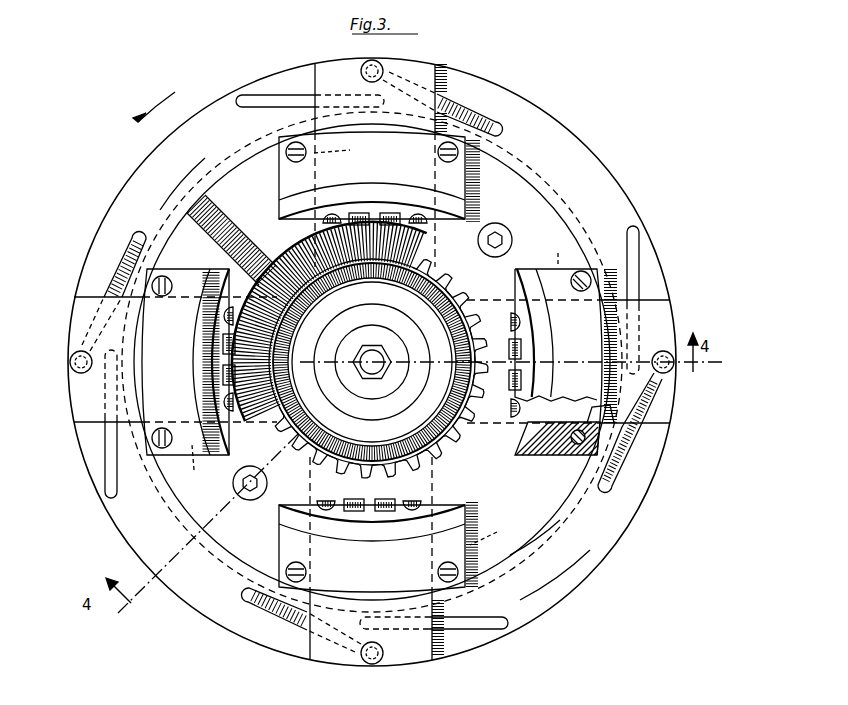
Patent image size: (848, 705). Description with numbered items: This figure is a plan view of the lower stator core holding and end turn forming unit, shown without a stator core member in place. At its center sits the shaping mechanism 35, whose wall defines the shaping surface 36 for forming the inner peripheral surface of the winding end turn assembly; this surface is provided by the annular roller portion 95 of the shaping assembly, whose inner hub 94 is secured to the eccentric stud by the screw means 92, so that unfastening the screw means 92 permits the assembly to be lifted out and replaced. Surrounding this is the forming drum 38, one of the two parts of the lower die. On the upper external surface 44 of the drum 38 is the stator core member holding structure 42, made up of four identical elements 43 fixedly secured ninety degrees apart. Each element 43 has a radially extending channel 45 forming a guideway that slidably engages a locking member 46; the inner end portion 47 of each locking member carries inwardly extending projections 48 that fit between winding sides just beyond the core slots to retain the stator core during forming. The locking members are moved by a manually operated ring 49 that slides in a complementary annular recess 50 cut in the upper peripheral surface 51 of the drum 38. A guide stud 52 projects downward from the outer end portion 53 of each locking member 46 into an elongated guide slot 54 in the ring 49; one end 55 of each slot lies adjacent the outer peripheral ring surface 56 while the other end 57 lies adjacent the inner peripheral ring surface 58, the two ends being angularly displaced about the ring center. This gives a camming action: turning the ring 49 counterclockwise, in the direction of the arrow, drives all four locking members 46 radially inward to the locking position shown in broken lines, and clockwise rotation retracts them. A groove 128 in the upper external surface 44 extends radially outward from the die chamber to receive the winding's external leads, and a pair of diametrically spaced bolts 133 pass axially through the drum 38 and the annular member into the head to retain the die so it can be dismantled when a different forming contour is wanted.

The shaping mechanism 35 is at (346, 331).
The shaping surface 36 is at (392, 278).
The forming drum 38 is at (528, 210).
The stator core member holding structure 42 is at (558, 202).
The elements 43 is at (453, 173).
The upper external surface 44 is at (248, 530).
The radially extending channel 45 is at (378, 342).
The locking member 46 is at (343, 91).
The inner end portion 47 is at (352, 190).
The inwardly extending projections 48 is at (360, 212).
The manually operated ring 49 is at (555, 572).
The annular recess 50 is at (540, 530).
The upper peripheral surface 51 is at (649, 698).
The guide stud 52 is at (383, 63).
The outer end portion 53 is at (420, 56).
The elongated guide slot 54 is at (280, 95).
The slot end 55 is at (362, 70).
The outer peripheral ring surface 56 is at (223, 93).
The slot end 57 is at (500, 130).
The inner peripheral ring surface 58 is at (232, 172).
The screw means 92 is at (373, 350).
The inner hub 94 is at (400, 400).
The annular roller portion 95 is at (428, 310).
The groove 128 is at (237, 237).
The bolts 133 is at (512, 237).